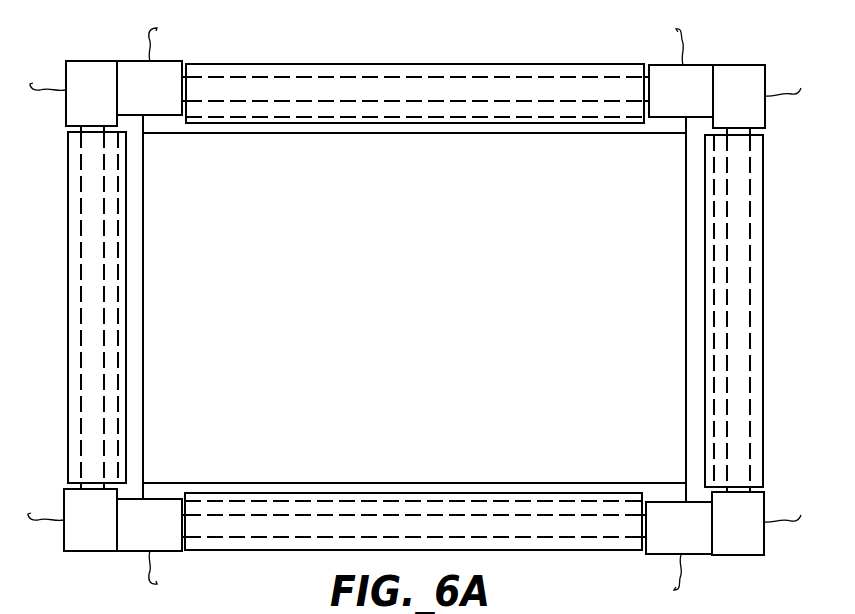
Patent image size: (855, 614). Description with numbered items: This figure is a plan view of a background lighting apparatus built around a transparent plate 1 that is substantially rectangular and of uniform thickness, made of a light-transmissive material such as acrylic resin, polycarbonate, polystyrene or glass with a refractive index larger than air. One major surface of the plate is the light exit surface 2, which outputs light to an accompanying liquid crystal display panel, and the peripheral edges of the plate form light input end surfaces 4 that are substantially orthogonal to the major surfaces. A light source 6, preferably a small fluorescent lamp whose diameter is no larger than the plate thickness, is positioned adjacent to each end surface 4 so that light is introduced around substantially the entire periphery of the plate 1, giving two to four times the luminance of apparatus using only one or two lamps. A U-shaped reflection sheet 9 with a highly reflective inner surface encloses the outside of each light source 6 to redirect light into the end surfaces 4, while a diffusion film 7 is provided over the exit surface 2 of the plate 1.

The transparent plate 1 is at (143, 492).
The light exit surface 2 is at (130, 298).
The light input end surface 4 is at (383, 115).
The light source 6 is at (167, 76).
The diffusion film 7 is at (443, 469).
The reflection sheet 9 is at (545, 550).